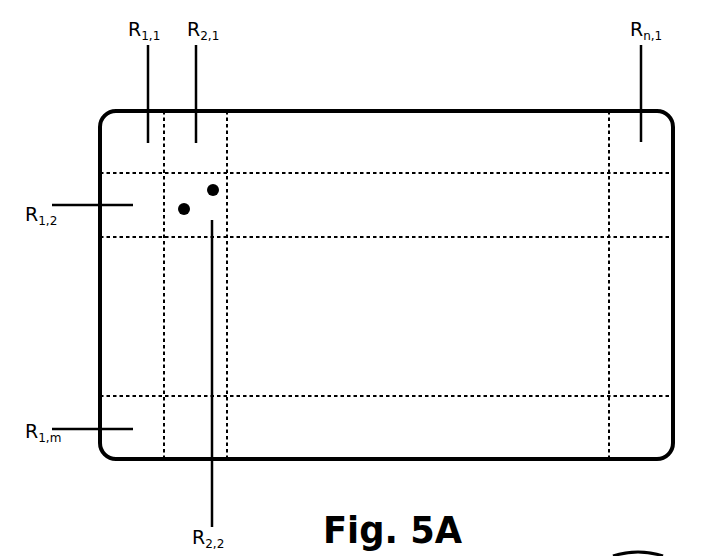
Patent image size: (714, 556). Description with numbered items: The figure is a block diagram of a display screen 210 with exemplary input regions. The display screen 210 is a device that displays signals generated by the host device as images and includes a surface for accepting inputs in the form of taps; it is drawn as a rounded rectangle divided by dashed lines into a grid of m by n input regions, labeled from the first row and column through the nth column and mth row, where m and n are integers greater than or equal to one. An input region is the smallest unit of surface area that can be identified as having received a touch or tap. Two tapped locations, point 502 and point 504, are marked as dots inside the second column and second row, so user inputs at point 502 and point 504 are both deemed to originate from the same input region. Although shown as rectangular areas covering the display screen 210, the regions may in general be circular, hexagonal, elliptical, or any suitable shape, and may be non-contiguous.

The display screen 210 is at (427, 110).
The point 502 is at (213, 190).
The point 504 is at (184, 209).